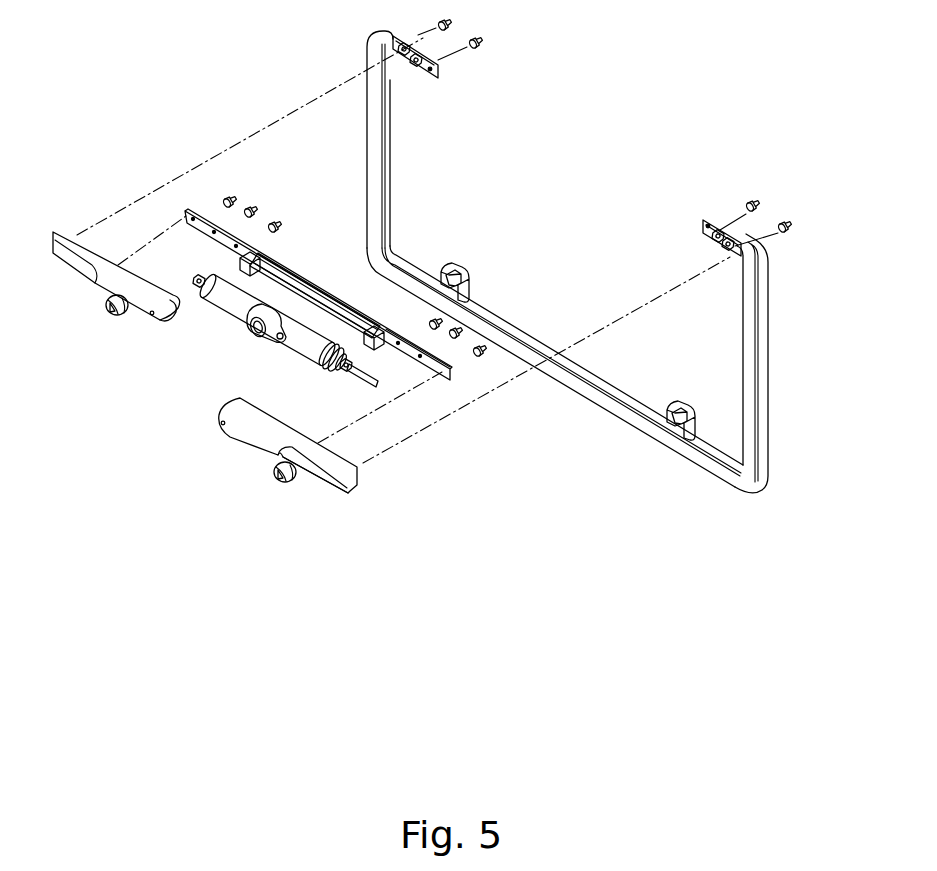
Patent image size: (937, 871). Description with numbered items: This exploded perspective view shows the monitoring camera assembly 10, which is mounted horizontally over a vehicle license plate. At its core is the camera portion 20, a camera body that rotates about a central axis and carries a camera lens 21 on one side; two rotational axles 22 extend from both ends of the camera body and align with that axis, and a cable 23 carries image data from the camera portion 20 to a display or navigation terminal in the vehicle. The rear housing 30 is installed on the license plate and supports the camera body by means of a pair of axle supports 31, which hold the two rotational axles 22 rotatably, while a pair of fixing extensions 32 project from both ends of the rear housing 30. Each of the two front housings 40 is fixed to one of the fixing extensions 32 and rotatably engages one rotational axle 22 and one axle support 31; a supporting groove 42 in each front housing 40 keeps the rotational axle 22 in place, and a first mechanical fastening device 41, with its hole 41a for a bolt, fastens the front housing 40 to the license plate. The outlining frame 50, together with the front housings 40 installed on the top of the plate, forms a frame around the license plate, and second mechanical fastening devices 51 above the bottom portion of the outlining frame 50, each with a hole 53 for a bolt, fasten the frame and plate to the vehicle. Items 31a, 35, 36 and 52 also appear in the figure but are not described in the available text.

The monitoring camera assembly 10 is at (137, 180).
The camera portion 20 is at (236, 318).
The camera lens 21 is at (261, 334).
The rotational axles 22 is at (195, 272).
The cable 23 is at (362, 380).
The rear housing 30 is at (291, 256).
The axle supports 31 is at (250, 254).
The rail top face 31a is at (388, 327).
The fixing extensions 32 is at (197, 213).
The fastening unit 35 is at (237, 112).
The fastening bolt 36 is at (226, 199).
The front housings 40 is at (138, 302).
The first mechanical fastening device 41 is at (122, 310).
The hole 41a is at (107, 305).
The supporting groove 42 is at (166, 320).
The outlining frame 50 is at (778, 432).
The second mechanical fastening devices 51 is at (440, 70).
The fixing bolt 52 is at (478, 44).
The hole 53 is at (466, 276).